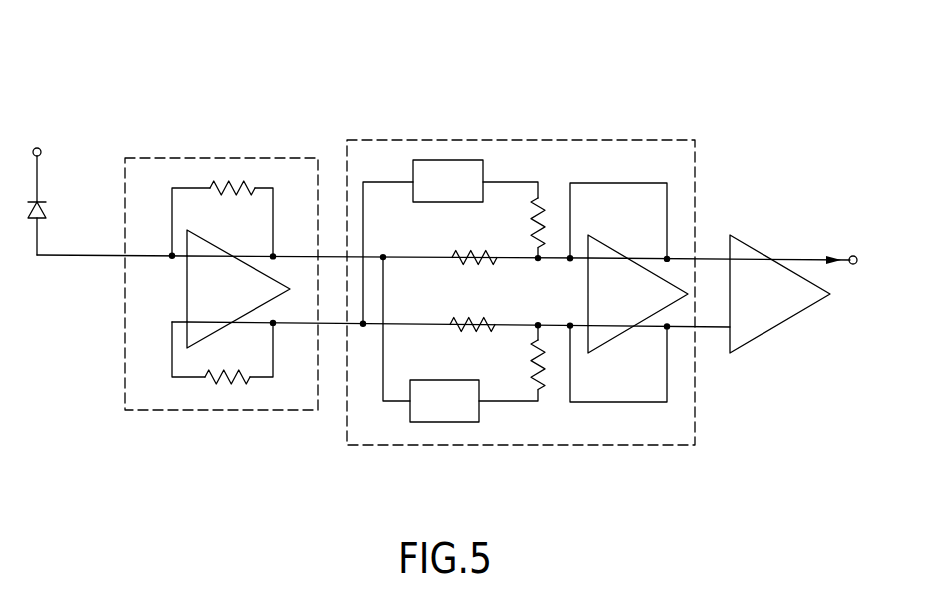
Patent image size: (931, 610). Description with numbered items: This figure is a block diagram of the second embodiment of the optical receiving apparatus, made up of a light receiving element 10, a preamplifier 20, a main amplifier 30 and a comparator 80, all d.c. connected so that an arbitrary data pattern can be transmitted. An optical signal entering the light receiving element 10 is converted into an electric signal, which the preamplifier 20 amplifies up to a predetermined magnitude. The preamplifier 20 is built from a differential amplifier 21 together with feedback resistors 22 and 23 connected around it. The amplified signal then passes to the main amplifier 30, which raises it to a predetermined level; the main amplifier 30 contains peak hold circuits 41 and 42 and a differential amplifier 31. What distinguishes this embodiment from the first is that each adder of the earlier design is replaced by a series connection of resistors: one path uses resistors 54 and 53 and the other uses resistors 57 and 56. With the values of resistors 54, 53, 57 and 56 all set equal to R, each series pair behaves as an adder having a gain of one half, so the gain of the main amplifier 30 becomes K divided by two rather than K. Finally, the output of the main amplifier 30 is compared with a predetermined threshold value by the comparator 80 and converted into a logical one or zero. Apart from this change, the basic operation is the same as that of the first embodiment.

The light receiving element 10 is at (33, 219).
The preamplifier 20 is at (161, 158).
The differential amplifier 21 is at (187, 297).
The feedback resistor 22 is at (243, 188).
The feedback resistor 23 is at (218, 380).
The main amplifier 30 is at (530, 138).
The differential amplifier 31 is at (617, 335).
The peak hold circuit 41 is at (447, 160).
The peak hold circuit 42 is at (446, 422).
The resistor 53 is at (497, 252).
The resistor 54 is at (545, 215).
The resistor 56 is at (478, 329).
The resistor 57 is at (540, 385).
The comparator 80 is at (753, 343).